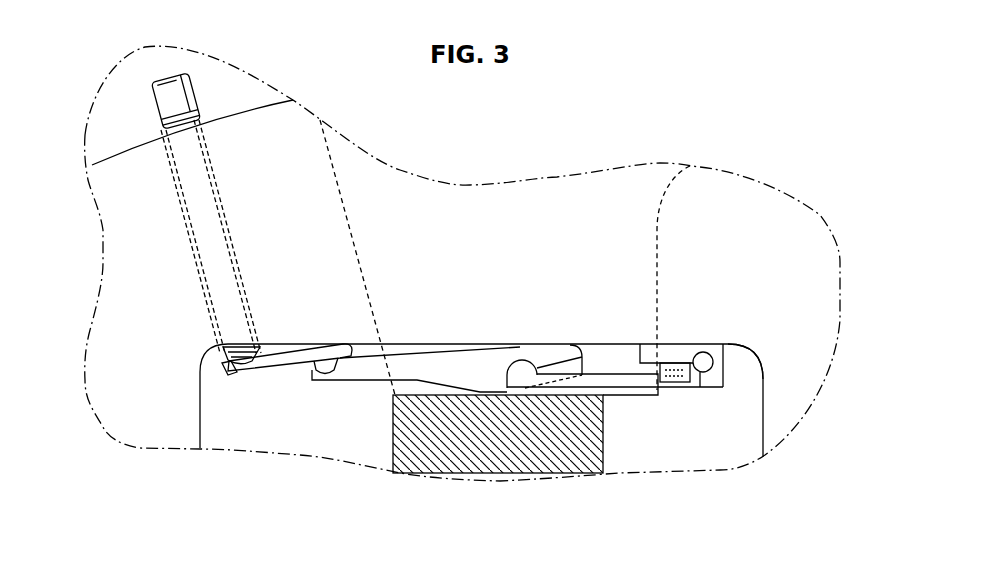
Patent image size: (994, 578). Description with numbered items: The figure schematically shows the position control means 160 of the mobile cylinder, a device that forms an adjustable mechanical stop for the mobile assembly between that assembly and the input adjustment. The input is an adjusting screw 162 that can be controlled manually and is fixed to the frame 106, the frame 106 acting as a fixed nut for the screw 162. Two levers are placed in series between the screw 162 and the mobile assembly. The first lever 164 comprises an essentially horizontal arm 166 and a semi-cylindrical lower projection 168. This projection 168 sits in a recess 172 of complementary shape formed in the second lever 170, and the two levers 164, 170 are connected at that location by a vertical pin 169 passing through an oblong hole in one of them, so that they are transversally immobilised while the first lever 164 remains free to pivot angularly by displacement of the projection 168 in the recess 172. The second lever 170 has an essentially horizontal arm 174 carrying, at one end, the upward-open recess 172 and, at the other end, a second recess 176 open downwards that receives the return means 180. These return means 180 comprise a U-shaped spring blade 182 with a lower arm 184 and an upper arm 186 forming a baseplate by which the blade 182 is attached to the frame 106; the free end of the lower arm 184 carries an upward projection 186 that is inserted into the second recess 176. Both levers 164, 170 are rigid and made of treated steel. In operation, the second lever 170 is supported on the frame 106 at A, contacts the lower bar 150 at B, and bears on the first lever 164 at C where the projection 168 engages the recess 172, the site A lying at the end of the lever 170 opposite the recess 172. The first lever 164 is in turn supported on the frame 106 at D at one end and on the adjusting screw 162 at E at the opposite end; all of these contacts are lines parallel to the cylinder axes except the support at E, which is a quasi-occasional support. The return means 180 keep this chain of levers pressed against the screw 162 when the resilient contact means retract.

The frame 106 is at (778, 402).
The lower bar 150 is at (567, 448).
The control means 160 is at (547, 205).
The adjusting screw 162 is at (201, 86).
The first lever 164 is at (270, 368).
The horizontal arm 166 is at (289, 342).
The lower projection 168 is at (304, 378).
The vertical pin 169 is at (319, 342).
The second lever 170 is at (440, 368).
The recess 172 is at (349, 378).
The horizontal arm 174 is at (447, 398).
The second recess 176 is at (522, 356).
The return means 180 is at (718, 343).
The U-shaped spring blade 182 is at (715, 380).
The lower arm 184 is at (628, 390).
The upper arm / projection 186 is at (680, 345).
The contact site A is at (572, 343).
The contact point B is at (525, 398).
The contact point C is at (325, 379).
The contact point D is at (350, 345).
The contact point E is at (241, 378).